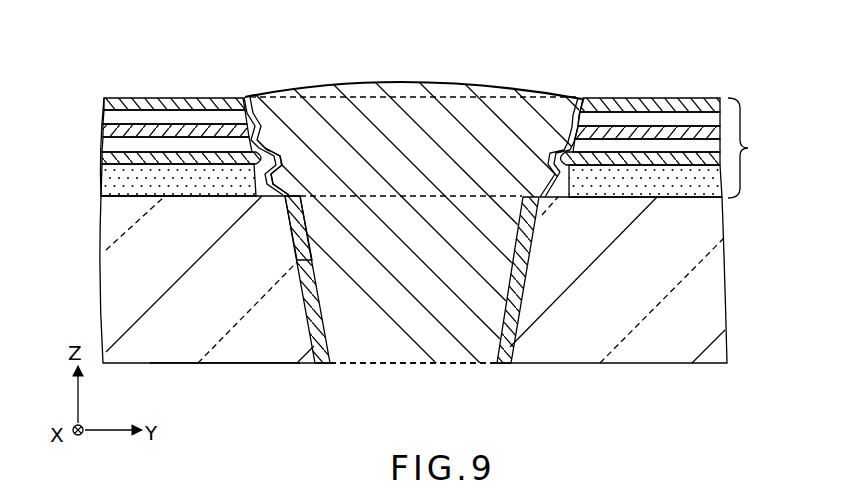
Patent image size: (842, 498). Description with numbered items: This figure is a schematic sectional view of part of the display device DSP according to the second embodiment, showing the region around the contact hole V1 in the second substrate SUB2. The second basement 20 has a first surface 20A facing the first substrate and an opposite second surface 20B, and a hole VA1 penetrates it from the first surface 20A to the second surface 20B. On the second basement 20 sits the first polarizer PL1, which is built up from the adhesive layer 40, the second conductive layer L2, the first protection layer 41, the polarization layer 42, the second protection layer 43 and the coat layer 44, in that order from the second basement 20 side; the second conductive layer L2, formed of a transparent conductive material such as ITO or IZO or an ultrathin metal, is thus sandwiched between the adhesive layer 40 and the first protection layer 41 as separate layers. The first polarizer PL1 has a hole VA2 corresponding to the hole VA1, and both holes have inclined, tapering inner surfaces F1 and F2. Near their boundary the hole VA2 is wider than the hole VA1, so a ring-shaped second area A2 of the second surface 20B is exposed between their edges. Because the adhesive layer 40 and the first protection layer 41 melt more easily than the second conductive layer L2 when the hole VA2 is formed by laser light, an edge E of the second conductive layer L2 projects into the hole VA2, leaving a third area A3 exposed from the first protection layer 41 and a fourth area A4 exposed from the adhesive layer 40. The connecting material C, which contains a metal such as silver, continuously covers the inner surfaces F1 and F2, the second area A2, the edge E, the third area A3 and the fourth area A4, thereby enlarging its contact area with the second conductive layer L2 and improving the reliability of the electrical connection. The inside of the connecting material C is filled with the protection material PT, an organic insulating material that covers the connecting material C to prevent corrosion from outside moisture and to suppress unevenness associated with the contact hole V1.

The coat layer 44 is at (110, 104).
The second protection layer 43 is at (108, 117).
The polarization layer 42 is at (108, 131).
The first protection layer 41 is at (106, 146).
The second conductive layer L2 is at (106, 159).
The adhesive layer 40 is at (104, 183).
The second basement 20 is at (732, 262).
The first surface 20A is at (226, 366).
The second surface 20B is at (190, 185).
The second substrate SUB2 is at (738, 320).
The first polarizer PL1 is at (757, 148).
The display device DSP is at (699, 78).
The protection material PT is at (506, 100).
The contact hole V1 is at (386, 125).
The hole (first hole) VA1 is at (399, 345).
The hole (second hole) VA2 is at (448, 130).
The inner surface of hole VA2 F2 is at (256, 124).
The inner surface of hole VA1 F1 is at (302, 231).
The connecting material C is at (323, 307).
The second area A2 is at (280, 183).
The third area A3 is at (573, 143).
The fourth area A4 is at (566, 185).
The edge of the second conductive layer E is at (553, 156).